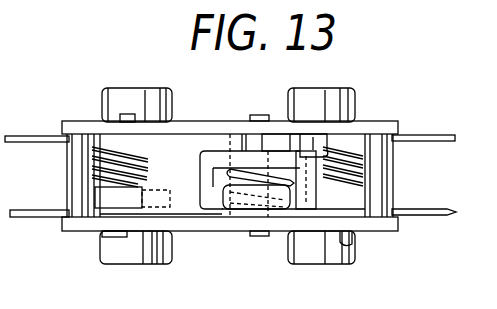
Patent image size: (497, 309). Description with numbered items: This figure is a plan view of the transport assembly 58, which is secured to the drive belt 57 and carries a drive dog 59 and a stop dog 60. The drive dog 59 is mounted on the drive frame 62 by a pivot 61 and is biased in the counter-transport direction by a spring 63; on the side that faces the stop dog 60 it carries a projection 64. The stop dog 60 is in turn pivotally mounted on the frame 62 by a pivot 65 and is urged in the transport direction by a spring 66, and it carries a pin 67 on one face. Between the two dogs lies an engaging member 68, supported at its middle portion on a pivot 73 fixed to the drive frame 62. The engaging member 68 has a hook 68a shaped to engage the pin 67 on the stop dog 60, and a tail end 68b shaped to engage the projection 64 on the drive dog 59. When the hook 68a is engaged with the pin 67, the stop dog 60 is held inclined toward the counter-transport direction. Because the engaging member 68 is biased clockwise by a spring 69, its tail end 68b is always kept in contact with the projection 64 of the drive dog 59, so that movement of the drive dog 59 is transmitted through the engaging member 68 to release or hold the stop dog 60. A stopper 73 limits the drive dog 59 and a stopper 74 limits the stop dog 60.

The drive belt 57 is at (421, 214).
The transport assembly 58 is at (80, 113).
The drive dog 59 is at (108, 204).
The stop dog 60 is at (229, 210).
The pivot 61 is at (118, 238).
The drive frame 62 is at (190, 120).
The spring 63 is at (148, 168).
The projection 64 is at (153, 203).
The pivot 65 is at (350, 246).
The spring 66 is at (352, 133).
The pin 67 is at (297, 190).
The engaging member 68 is at (220, 146).
The hook 68a is at (323, 135).
The tail end 68b is at (200, 212).
The spring 69 is at (257, 182).
The pivot 73 is at (67, 175).
The stopper 74 is at (398, 173).